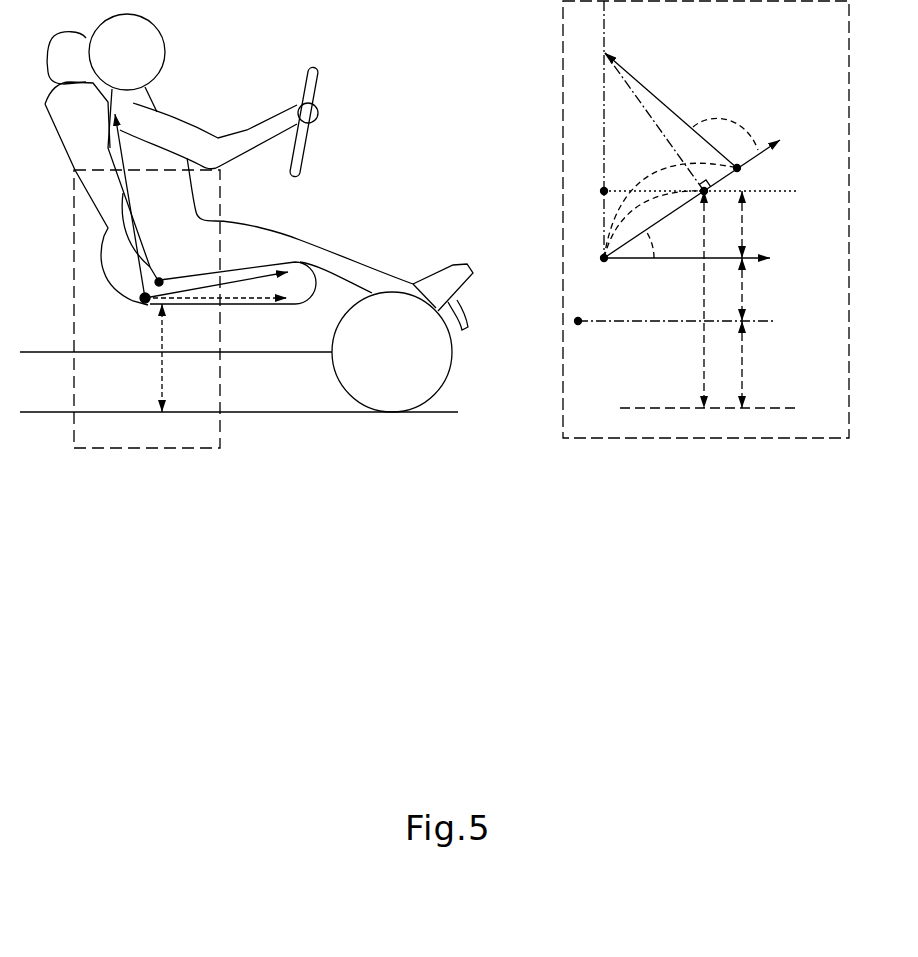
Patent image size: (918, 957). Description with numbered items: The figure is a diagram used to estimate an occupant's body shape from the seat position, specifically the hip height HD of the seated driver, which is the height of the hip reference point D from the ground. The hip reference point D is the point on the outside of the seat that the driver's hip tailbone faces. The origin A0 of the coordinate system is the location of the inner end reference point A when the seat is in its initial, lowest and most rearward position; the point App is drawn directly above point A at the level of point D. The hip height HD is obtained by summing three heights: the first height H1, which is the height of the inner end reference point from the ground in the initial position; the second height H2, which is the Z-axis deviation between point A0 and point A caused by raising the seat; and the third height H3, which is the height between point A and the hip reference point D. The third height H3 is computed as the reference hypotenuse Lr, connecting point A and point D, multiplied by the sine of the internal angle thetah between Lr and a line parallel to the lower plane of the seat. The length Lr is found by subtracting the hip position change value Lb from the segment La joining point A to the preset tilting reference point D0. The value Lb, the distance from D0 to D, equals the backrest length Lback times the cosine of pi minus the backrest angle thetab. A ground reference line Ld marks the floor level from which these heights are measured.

The point A is at (454, 239).
The reference point above hip point at D height App is at (616, 178).
The origin A0 is at (670, 338).
The hip reference point D is at (440, 233).
The tilting reference point D0 is at (754, 176).
The hip height Hd HD is at (433, 301).
The first height H1 is at (757, 364).
The second height H2 is at (757, 289).
The third height H3 is at (757, 224).
The line segment La is at (670, 210).
The reference hypotenuse Lr is at (654, 224).
The hip position change value Lb is at (747, 191).
The ground reference line Ld is at (440, 412).
The backrest length L_back Lback is at (426, 175).
The backrest angle θback thetab is at (725, 124).
The internal angle θh thetah is at (665, 242).